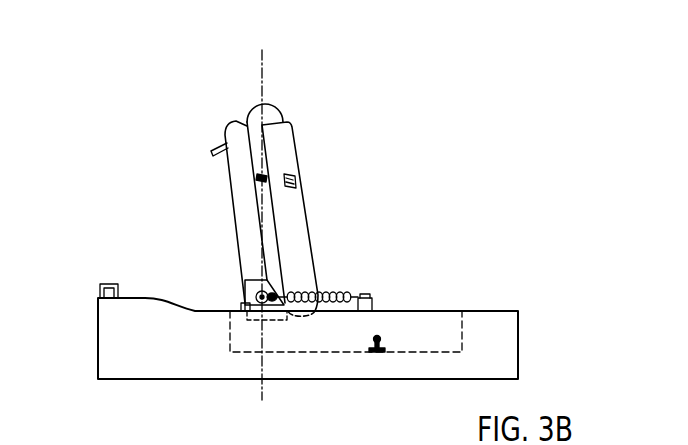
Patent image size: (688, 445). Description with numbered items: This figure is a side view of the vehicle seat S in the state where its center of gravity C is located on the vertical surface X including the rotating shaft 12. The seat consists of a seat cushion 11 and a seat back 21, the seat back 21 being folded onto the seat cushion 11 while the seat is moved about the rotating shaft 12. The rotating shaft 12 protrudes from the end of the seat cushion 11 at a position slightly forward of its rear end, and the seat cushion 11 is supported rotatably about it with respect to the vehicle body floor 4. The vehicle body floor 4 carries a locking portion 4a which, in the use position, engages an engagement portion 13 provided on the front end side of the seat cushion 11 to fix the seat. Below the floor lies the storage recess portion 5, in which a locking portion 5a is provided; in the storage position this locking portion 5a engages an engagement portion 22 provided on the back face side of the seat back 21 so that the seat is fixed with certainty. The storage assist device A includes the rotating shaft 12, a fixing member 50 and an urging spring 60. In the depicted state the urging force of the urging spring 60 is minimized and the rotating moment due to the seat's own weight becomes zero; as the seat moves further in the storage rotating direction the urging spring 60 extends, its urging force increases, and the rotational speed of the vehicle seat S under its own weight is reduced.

The vehicle body floor 4 is at (495, 311).
The locking portion 4a is at (104, 283).
The storage recess portion 5 is at (462, 330).
The locking portion 5a is at (372, 352).
The seat cushion 11 is at (246, 234).
The rotating shaft 12 is at (250, 291).
The engagement portion 13 is at (218, 148).
The seat back 21 is at (301, 209).
The engagement portion 22 is at (291, 172).
The fixing member 50 is at (372, 303).
The urging spring 60 is at (332, 290).
The storage assist device A is at (372, 278).
The center of gravity C is at (258, 177).
The vehicle seat S is at (306, 120).
The vertical surface X is at (262, 213).